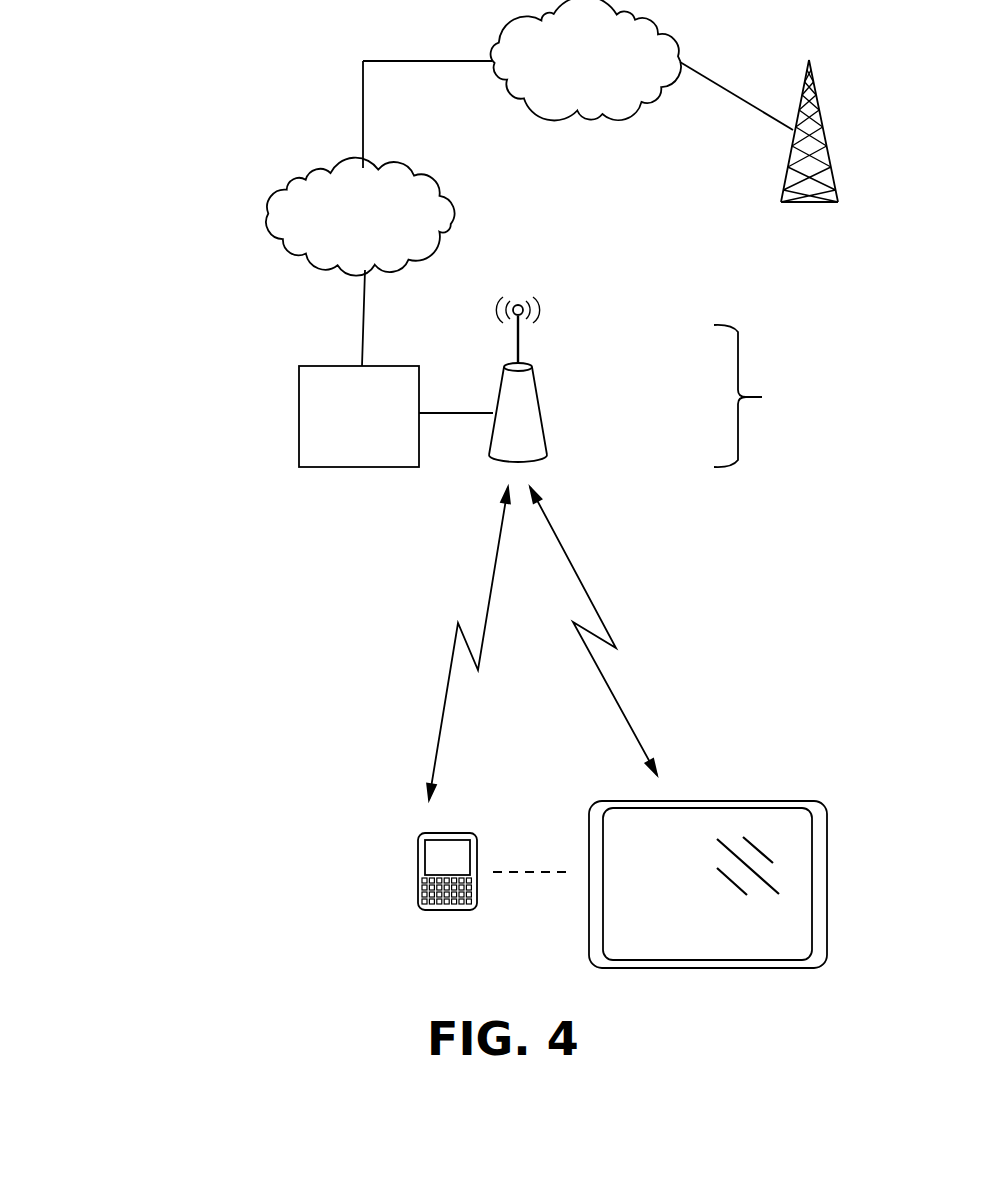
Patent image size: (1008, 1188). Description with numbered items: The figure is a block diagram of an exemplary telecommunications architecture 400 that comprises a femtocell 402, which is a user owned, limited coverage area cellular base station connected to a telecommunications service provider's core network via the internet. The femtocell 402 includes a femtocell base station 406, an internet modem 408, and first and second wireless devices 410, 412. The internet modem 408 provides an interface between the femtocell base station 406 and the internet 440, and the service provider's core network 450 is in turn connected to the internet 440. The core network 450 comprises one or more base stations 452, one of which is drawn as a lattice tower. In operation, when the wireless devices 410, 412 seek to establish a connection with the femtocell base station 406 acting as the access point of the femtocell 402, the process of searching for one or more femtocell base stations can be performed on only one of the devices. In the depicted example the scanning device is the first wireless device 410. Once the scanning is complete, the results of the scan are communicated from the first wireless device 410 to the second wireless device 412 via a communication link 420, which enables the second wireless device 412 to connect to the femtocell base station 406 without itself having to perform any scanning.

The telecommunications architecture 400 is at (168, 158).
The femtocell 402 is at (771, 396).
The femtocell base station 406 is at (540, 409).
The internet modem 408 is at (312, 414).
The first wireless device 410 is at (754, 813).
The second wireless device 412 is at (418, 863).
The communication link 420 is at (524, 870).
The internet 440 is at (437, 190).
The core network 450 is at (661, 37).
The base station 452 is at (794, 157).